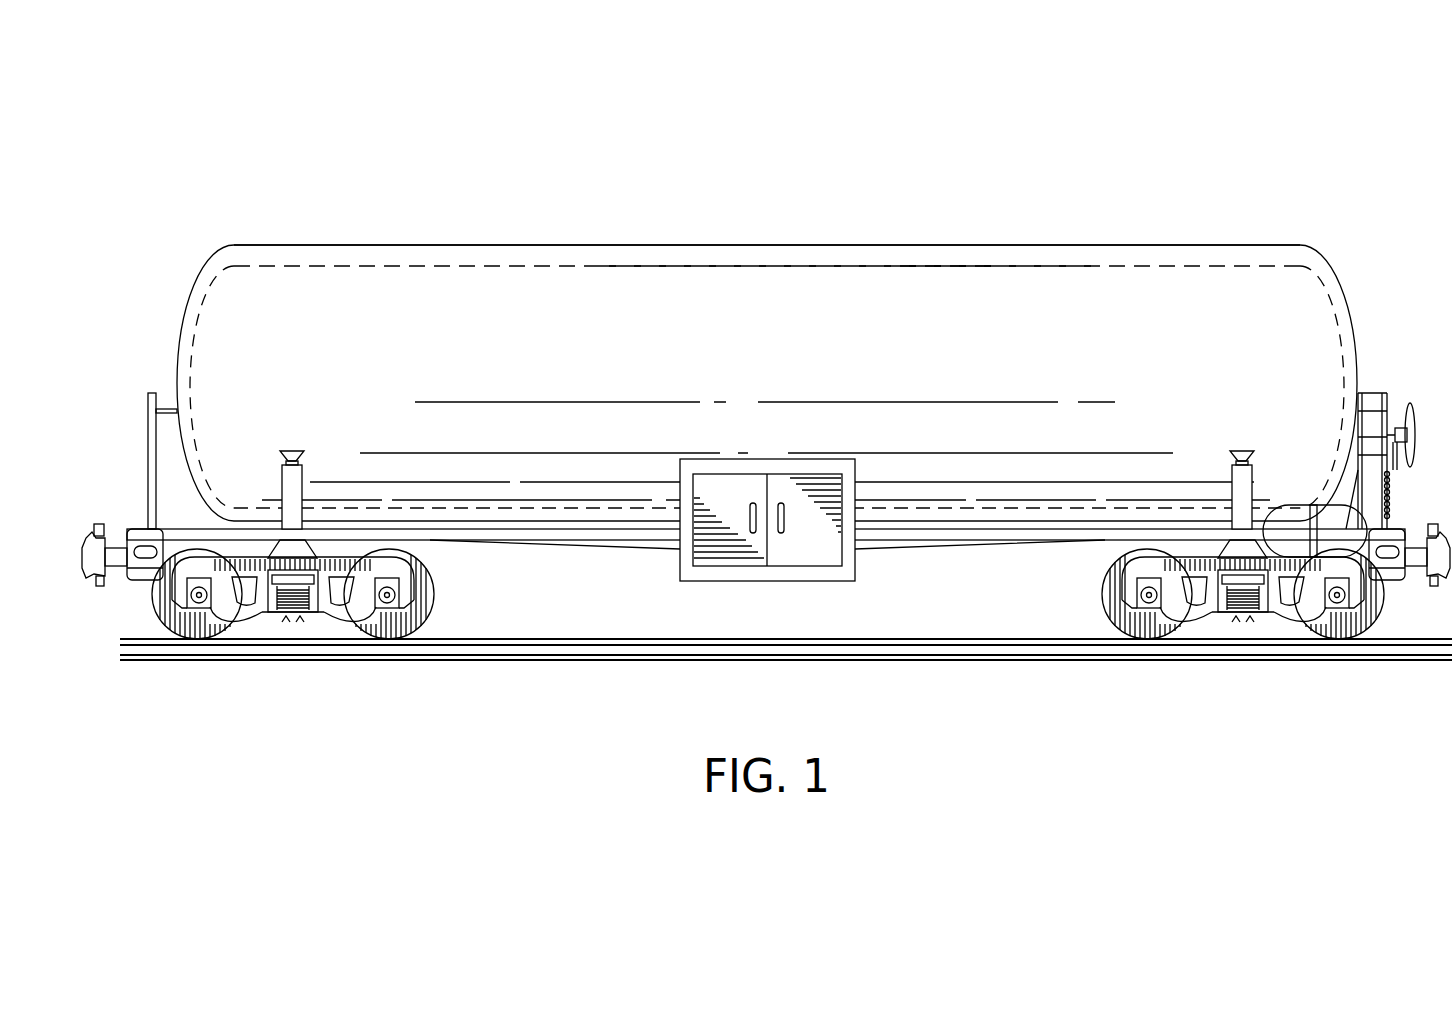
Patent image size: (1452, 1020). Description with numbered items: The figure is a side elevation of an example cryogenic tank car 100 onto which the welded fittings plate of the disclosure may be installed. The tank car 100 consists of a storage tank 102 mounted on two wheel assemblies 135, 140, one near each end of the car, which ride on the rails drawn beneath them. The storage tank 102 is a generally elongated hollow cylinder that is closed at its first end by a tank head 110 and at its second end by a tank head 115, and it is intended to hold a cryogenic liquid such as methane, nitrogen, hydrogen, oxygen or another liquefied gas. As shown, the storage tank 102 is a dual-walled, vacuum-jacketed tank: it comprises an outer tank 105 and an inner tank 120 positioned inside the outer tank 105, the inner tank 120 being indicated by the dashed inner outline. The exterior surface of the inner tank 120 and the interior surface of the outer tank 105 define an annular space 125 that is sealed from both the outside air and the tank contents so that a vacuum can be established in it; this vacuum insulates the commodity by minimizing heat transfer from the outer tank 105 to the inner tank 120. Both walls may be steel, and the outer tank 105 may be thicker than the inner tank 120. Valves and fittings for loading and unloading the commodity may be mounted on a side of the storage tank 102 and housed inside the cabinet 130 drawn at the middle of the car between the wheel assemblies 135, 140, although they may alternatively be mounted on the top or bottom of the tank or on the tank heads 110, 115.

The cryogenic tank car 100 is at (310, 108).
The storage tank 102 is at (430, 338).
The outer tank 105 is at (620, 245).
The tank head 110 is at (195, 281).
The tank head 115 is at (1342, 284).
The inner tank 120 is at (1001, 265).
The annular space 125 is at (818, 256).
The cabinet 130 is at (765, 459).
The wheel assembly 135 is at (322, 618).
The wheel assembly 140 is at (1208, 612).